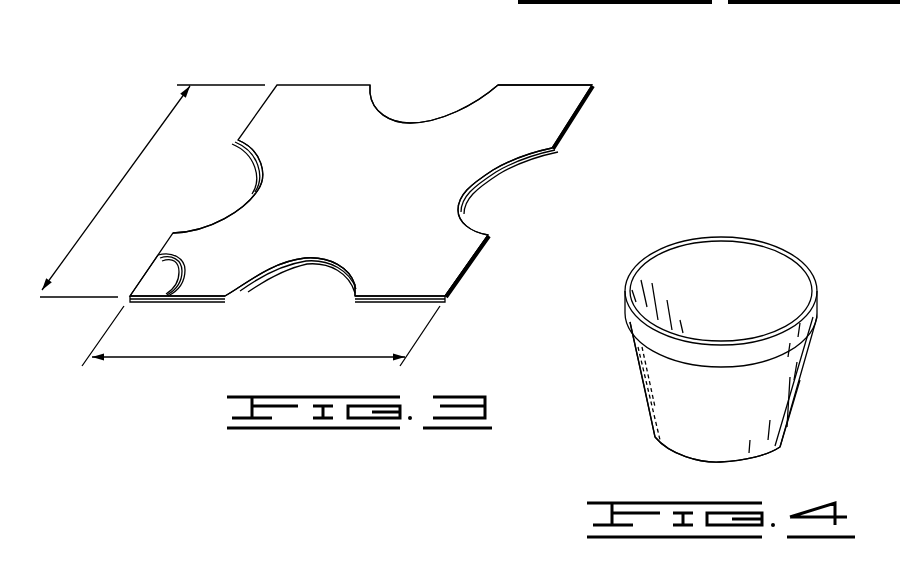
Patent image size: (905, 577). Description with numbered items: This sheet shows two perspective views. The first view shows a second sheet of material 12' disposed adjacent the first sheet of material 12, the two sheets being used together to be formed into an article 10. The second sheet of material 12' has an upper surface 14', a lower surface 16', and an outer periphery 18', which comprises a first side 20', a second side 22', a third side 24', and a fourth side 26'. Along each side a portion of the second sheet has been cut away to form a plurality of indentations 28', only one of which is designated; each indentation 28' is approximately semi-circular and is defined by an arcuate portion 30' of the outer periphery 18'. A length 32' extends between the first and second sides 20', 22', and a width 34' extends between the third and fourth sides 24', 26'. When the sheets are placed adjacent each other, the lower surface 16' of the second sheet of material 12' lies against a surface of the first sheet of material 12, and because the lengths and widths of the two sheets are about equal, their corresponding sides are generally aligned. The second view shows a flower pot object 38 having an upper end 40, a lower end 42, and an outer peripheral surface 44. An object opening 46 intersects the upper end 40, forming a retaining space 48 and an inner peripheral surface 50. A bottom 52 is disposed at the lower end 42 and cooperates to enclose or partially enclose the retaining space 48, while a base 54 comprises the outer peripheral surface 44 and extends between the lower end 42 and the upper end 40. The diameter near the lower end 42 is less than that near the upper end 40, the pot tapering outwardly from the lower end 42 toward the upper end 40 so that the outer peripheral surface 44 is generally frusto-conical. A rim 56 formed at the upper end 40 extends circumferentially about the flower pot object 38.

In FIG. 3, the article 10 is at (338, 55).
In FIG. 3, the first sheet of material 12 is at (120, 275).
In FIG. 3, the second sheet of material 12' is at (361, 160).
In FIG. 3, the upper surface 14' is at (434, 107).
In FIG. 3, the lower surface 16' is at (139, 265).
In FIG. 3, the outer periphery 18' is at (390, 319).
In FIG. 3, the first side 20' is at (489, 265).
In FIG. 3, the second side 22' is at (211, 186).
In FIG. 3, the third side 24' is at (548, 67).
In FIG. 3, the fourth side 26' is at (179, 319).
In FIG. 3, the indentation 28' is at (290, 291).
In FIG. 3, the arcuate portion 30' is at (508, 191).
In FIG. 3, the length 32' is at (261, 336).
In FIG. 3, the width 34' is at (152, 191).
In FIG. 4, the flower pot object 38 is at (812, 355).
In FIG. 4, the upper end 40 is at (720, 236).
In FIG. 4, the lower end 42 is at (778, 447).
In FIG. 4, the outer peripheral surface 44 is at (670, 383).
In FIG. 4, the object opening 46 is at (755, 282).
In FIG. 4, the retaining space 48 is at (683, 282).
In FIG. 4, the inner peripheral surface 50 is at (798, 288).
In FIG. 4, the bottom 52 is at (685, 458).
In FIG. 4, the base 54 is at (670, 408).
In FIG. 4, the rim 56 is at (632, 322).